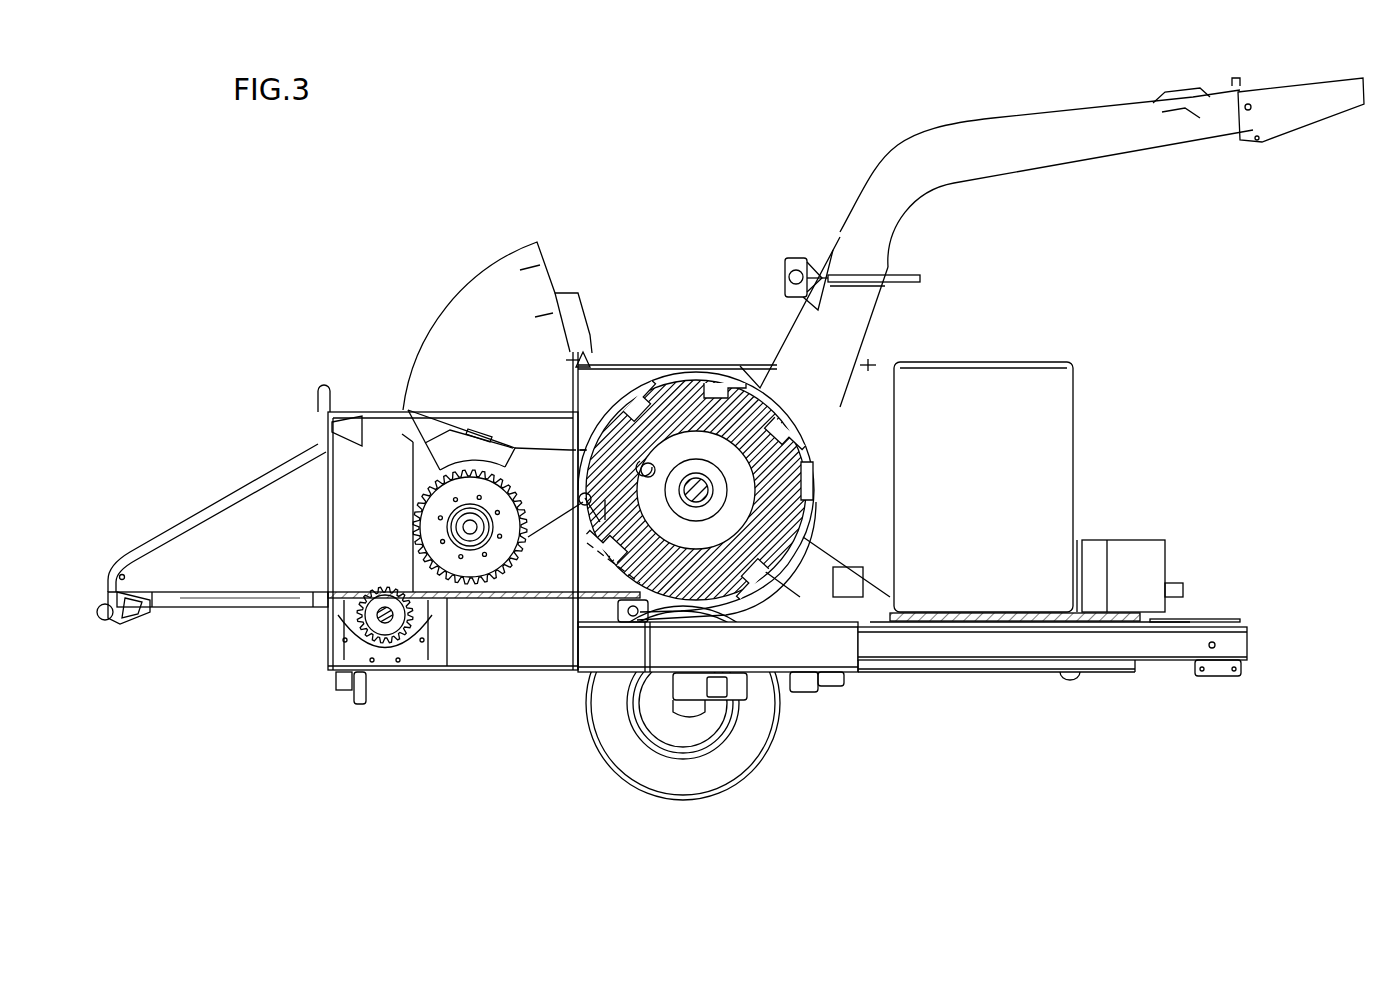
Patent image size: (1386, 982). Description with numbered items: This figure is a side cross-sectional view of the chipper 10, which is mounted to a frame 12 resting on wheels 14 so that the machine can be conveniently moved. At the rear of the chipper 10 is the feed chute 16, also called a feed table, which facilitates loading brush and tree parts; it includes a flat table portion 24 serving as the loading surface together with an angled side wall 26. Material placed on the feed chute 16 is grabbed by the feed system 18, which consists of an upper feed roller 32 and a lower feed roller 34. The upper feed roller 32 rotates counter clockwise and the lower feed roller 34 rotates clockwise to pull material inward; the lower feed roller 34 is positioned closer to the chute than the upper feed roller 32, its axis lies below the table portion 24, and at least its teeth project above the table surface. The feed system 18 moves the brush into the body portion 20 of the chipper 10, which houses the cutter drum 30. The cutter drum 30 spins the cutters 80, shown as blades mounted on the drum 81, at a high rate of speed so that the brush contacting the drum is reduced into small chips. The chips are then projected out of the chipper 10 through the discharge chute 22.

The chipper 10 is at (922, 742).
The frame 12 is at (1013, 672).
The wheels 14 is at (778, 733).
The feed chute 16 is at (210, 503).
The feed system 18 is at (400, 558).
The body portion 20 is at (648, 363).
The discharge chute 22 is at (1192, 140).
The table portion 24 is at (247, 592).
The side wall 26 is at (246, 552).
The cutter drum 30 is at (712, 405).
The upper feed roller 32 is at (496, 498).
The lower feed roller 34 is at (367, 620).
The cutters 80 is at (812, 472).
The drum 81 is at (787, 518).